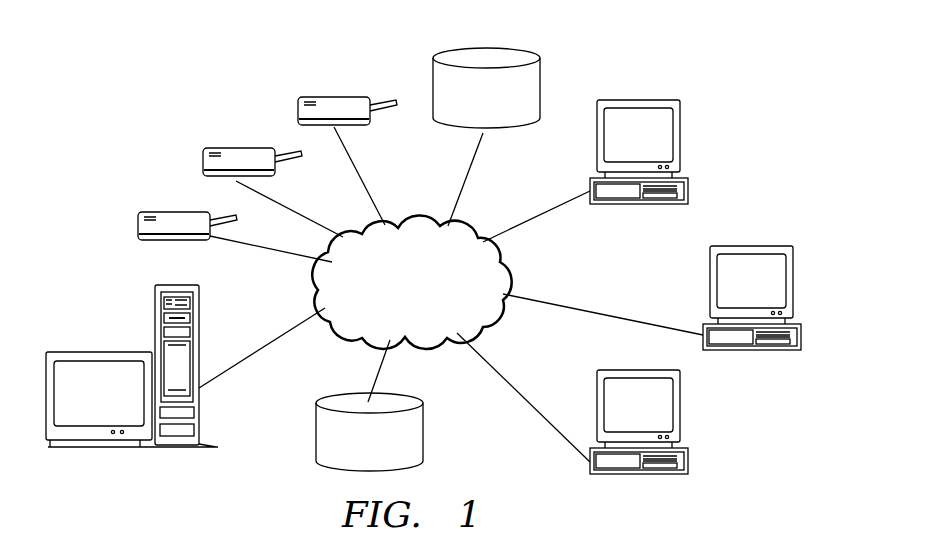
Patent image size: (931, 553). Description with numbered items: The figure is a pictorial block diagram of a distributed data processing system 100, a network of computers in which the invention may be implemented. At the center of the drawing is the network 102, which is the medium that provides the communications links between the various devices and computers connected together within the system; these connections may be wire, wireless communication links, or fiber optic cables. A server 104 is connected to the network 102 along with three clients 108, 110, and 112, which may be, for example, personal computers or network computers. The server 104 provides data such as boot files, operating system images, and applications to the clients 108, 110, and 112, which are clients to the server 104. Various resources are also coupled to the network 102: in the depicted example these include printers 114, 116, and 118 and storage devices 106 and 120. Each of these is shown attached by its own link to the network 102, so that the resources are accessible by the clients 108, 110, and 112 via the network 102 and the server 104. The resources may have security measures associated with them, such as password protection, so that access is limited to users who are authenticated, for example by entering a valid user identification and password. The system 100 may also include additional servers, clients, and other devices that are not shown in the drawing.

The distributed data processing system 100 is at (326, 66).
The network 102 is at (432, 309).
The server 104 is at (155, 307).
The storage device 106 is at (316, 446).
The client 108 is at (682, 147).
The client 110 is at (795, 286).
The client 112 is at (682, 410).
The printer 114 is at (139, 226).
The printer 116 is at (204, 163).
The printer 118 is at (299, 112).
The storage device 120 is at (541, 89).